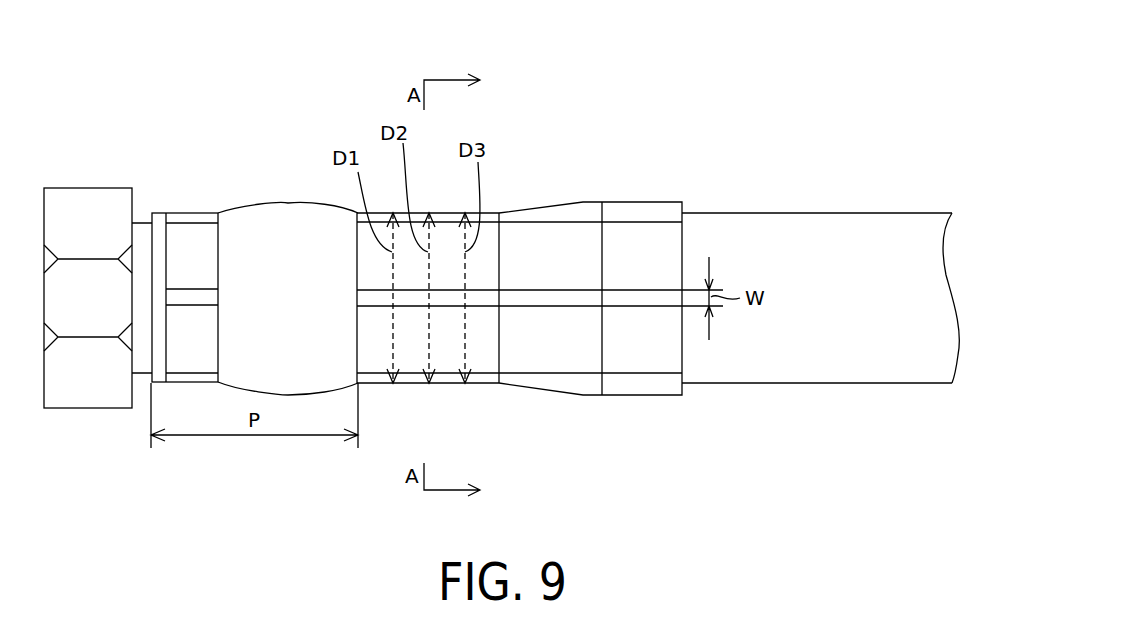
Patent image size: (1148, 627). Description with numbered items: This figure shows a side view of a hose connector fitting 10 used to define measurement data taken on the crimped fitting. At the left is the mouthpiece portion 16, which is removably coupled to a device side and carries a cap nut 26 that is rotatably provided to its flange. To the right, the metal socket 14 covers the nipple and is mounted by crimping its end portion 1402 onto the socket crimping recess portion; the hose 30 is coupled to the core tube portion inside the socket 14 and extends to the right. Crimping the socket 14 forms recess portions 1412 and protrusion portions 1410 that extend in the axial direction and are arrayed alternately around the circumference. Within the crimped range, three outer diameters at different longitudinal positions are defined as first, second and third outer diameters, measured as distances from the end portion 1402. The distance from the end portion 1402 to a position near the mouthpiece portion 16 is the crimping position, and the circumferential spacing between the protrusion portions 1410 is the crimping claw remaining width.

The hose connector fitting 10 is at (345, 122).
The socket 14 is at (618, 202).
The mouthpiece portion 16 is at (148, 216).
The cap nut 26 is at (80, 188).
The hose 30 is at (795, 213).
The end portion of the socket 1402 is at (148, 362).
The protrusion portions 1410 is at (648, 298).
The recess portions 1412 is at (618, 250).